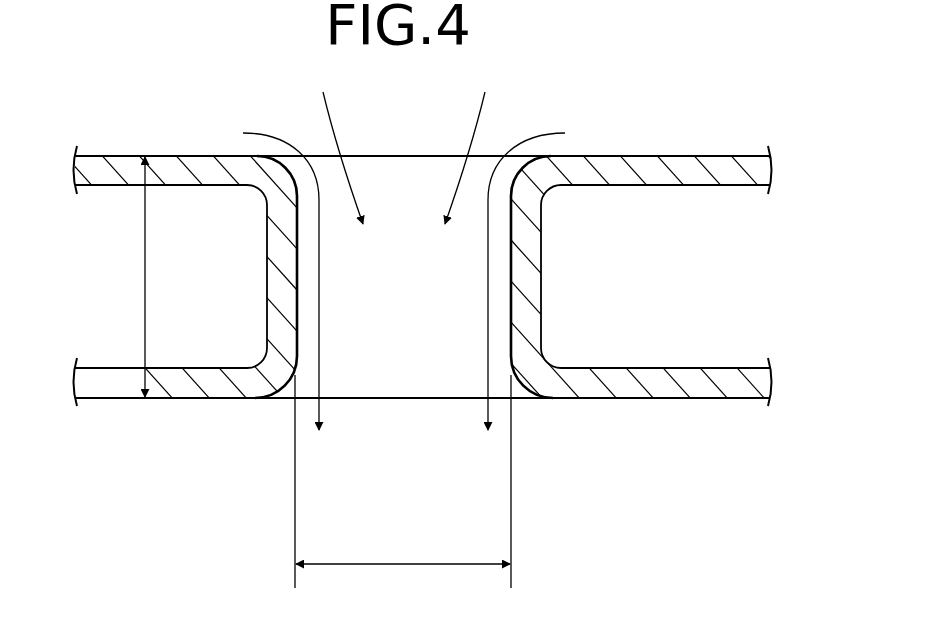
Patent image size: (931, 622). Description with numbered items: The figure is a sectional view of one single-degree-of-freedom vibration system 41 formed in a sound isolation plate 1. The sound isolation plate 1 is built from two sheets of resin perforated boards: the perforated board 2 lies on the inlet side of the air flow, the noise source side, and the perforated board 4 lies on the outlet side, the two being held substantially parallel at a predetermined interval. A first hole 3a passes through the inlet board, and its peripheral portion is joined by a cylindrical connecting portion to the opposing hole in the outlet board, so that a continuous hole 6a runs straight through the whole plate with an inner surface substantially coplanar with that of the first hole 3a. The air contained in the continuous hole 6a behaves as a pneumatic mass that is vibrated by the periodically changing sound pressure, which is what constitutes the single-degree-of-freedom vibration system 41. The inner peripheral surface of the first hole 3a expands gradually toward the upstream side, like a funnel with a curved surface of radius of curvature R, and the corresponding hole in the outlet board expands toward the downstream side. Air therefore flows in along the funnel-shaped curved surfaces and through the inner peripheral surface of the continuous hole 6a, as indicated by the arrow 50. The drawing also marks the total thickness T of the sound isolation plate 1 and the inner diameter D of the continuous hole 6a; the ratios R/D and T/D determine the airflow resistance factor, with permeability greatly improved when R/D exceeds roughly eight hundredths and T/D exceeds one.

The sound isolation plate 1 is at (688, 126).
The perforated board 2 is at (745, 155).
The first hole 3a is at (403, 156).
The perforated board 4 is at (712, 400).
The single-degree-of-freedom vibration system 41 is at (397, 406).
The arrow 50 is at (319, 384).
The continuous hole 6a is at (297, 266).
The total thickness T is at (128, 277).
The inner diameter D is at (403, 481).
The radius of curvature R is at (536, 173).